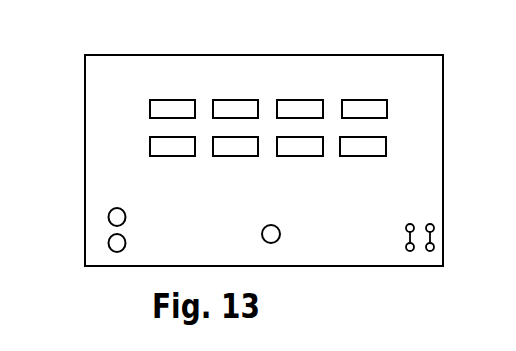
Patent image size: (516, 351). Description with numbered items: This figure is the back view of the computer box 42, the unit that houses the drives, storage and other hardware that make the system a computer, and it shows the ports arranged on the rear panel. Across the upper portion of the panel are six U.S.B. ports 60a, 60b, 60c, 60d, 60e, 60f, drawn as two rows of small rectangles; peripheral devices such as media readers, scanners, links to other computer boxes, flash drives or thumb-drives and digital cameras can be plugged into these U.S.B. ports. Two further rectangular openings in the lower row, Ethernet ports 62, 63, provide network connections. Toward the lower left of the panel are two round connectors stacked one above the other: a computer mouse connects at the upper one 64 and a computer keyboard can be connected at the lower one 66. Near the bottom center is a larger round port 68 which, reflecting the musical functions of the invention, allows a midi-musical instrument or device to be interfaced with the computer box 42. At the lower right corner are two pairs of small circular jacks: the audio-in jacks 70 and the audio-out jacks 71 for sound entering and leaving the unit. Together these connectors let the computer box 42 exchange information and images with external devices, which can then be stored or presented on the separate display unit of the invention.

The computer box 42 is at (103, 83).
The U.S.B. port 60a is at (173, 108).
The U.S.B. port 60b is at (238, 105).
The U.S.B. port 60c is at (295, 107).
The U.S.B. port 60d is at (355, 108).
The U.S.B. port 60e is at (377, 145).
The U.S.B. port 60f is at (301, 145).
The Ethernet port 62 is at (163, 145).
The Ethernet port 63 is at (228, 148).
The computer mouse port 64 is at (107, 218).
The computer keyboard port 66 is at (107, 246).
The midi port 68 is at (281, 247).
The audio-in jacks 70 is at (401, 243).
The audio-out jacks 71 is at (440, 243).